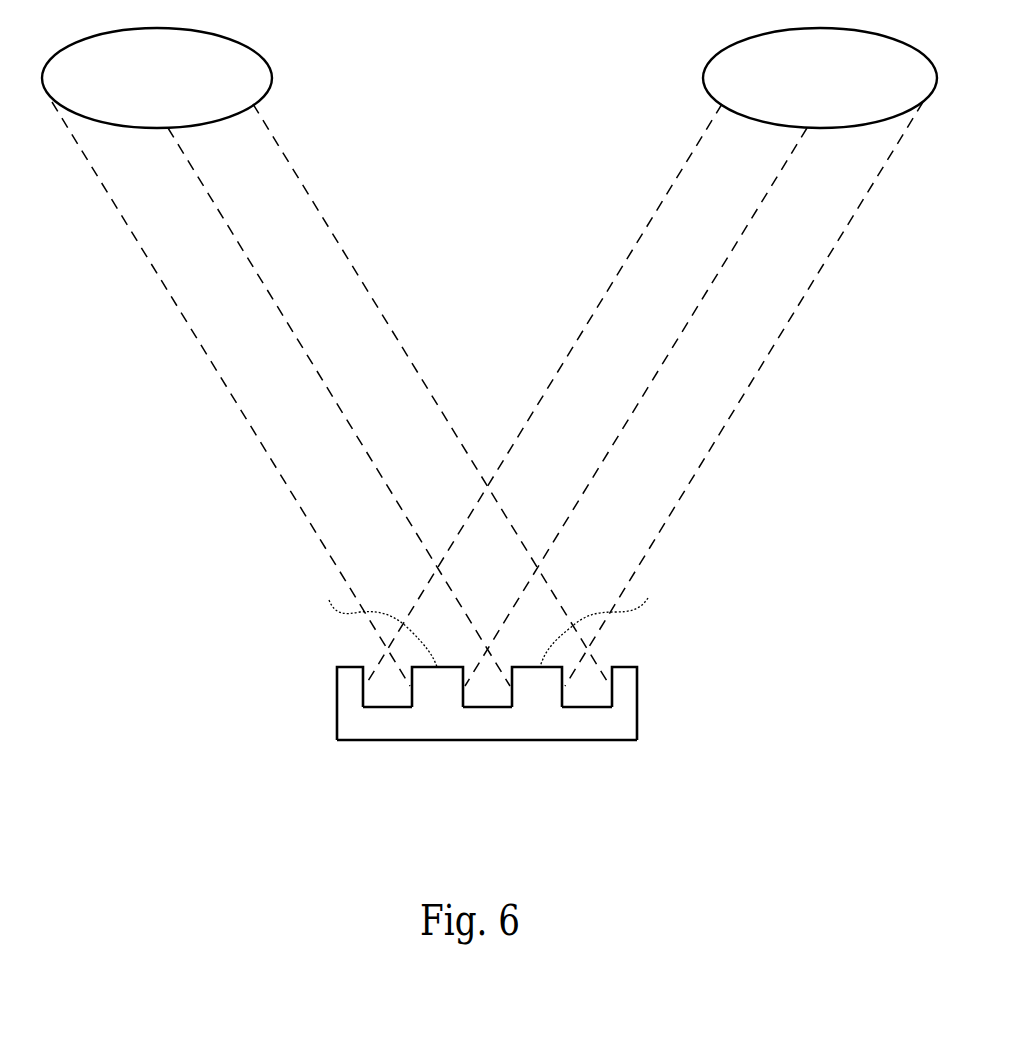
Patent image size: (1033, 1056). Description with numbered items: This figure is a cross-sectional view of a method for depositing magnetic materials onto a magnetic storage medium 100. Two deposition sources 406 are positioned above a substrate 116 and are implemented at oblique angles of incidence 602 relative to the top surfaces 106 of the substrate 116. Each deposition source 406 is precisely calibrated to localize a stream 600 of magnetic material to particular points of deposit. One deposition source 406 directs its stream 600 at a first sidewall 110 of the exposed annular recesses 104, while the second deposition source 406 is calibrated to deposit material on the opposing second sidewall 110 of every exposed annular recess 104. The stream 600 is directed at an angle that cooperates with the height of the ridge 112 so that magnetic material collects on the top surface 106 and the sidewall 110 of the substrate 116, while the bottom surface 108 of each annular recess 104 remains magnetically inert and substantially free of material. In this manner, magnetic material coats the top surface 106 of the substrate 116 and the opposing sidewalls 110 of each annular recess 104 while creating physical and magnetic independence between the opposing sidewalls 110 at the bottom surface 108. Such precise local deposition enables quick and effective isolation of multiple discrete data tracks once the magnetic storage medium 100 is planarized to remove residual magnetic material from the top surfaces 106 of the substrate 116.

The deposition source 406 is at (141, 88).
The stream of magnetic material 600 is at (341, 242).
The oblique angle of incidence 602 is at (491, 621).
The magnetic storage medium 100 is at (279, 611).
The annular recess 104 is at (577, 707).
The top surface 106 is at (346, 667).
The bottom surface 108 is at (388, 708).
The sidewall 110 is at (412, 680).
The ridge 112 is at (626, 675).
The substrate 116 is at (470, 734).